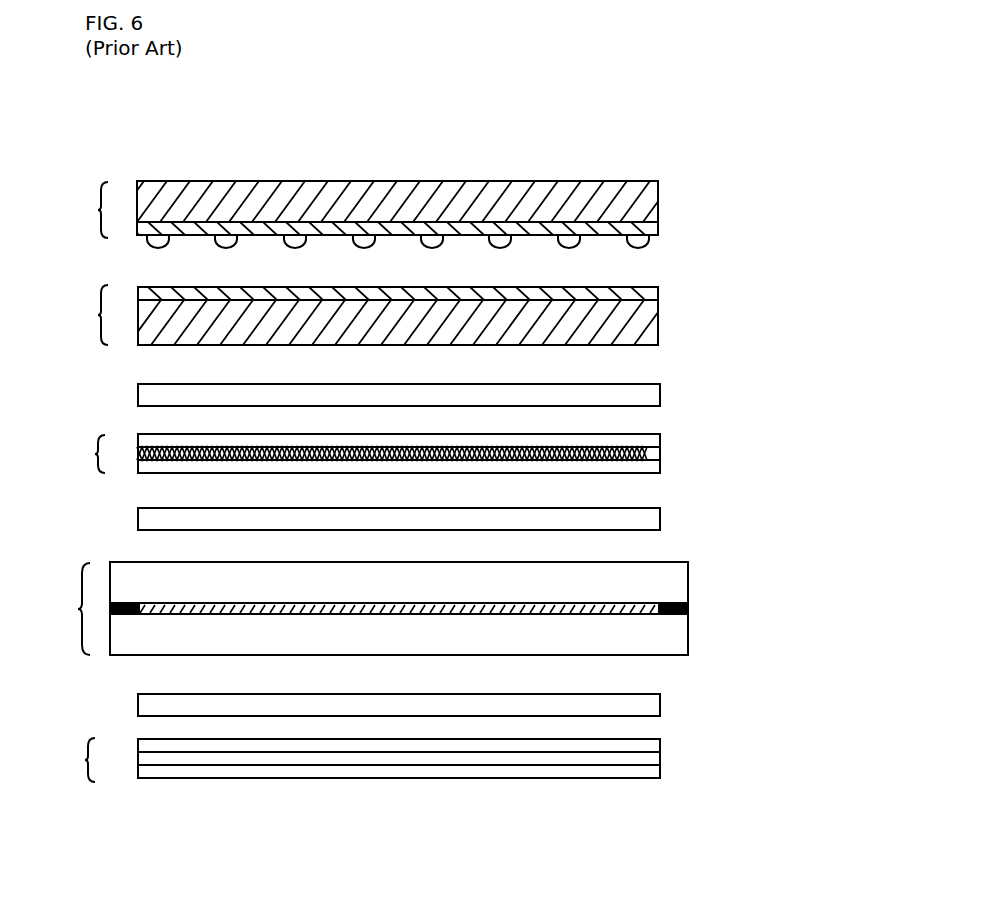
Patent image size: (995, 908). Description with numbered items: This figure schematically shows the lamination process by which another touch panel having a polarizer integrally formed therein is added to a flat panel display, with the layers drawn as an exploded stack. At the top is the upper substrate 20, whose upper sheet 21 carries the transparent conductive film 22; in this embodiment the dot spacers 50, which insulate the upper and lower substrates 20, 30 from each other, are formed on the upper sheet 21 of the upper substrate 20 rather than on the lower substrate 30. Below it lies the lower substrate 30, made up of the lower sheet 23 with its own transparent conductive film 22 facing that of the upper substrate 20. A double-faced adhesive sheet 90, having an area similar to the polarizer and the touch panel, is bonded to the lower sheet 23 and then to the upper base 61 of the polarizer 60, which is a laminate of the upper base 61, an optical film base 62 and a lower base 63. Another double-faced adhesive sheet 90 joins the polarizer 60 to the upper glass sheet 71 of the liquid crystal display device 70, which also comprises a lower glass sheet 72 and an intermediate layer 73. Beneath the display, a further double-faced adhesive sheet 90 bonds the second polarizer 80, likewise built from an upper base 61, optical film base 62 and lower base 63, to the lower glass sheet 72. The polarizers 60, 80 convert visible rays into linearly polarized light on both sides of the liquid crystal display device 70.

The upper substrate 20 is at (356, 180).
The upper sheet 21 is at (655, 200).
The transparent conductive film 22 is at (568, 232).
The lower sheet 23 is at (660, 318).
The lower substrate 30 is at (391, 315).
The dot spacers 50 is at (524, 233).
The polarizer 60 is at (339, 454).
The upper base 61 is at (660, 436).
The optical film base 62 is at (660, 450).
The lower base 63 is at (658, 465).
The liquid crystal display device 70 is at (406, 605).
The upper glass sheet 71 is at (675, 580).
The lower glass sheet 72 is at (683, 636).
The light guide layer 73 is at (690, 610).
The polarizer 80 is at (339, 760).
The double-faced adhesive sheet 90 is at (652, 392).